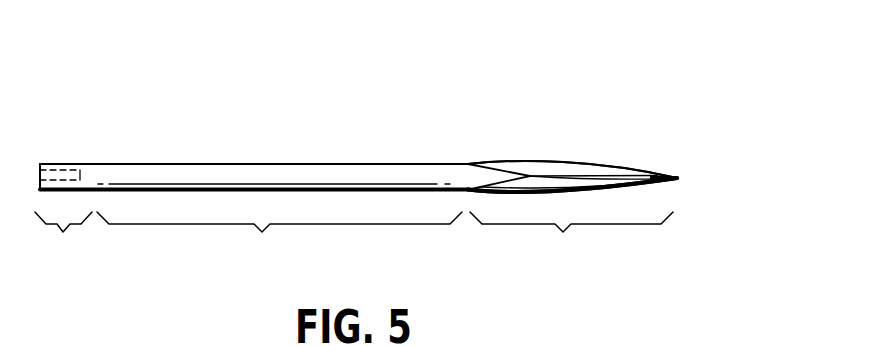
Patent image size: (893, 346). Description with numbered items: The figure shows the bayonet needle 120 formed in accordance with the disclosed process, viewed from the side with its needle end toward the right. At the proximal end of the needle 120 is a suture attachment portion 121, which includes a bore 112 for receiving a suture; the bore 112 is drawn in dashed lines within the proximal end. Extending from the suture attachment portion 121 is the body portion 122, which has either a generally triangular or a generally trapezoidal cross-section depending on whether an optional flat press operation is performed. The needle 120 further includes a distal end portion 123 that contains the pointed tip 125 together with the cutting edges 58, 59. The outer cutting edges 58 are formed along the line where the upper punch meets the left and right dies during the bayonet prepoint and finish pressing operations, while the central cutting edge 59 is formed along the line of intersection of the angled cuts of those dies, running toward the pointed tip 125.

The bayonet needle 120 is at (293, 149).
The bore 112 is at (66, 170).
The outer cutting edges 58 is at (568, 163).
The central cutting edge 59 is at (632, 175).
The pointed tip 125 is at (677, 179).
The suture attachment portion 121 is at (63, 237).
The body portion 122 is at (279, 237).
The distal end portion 123 is at (571, 237).